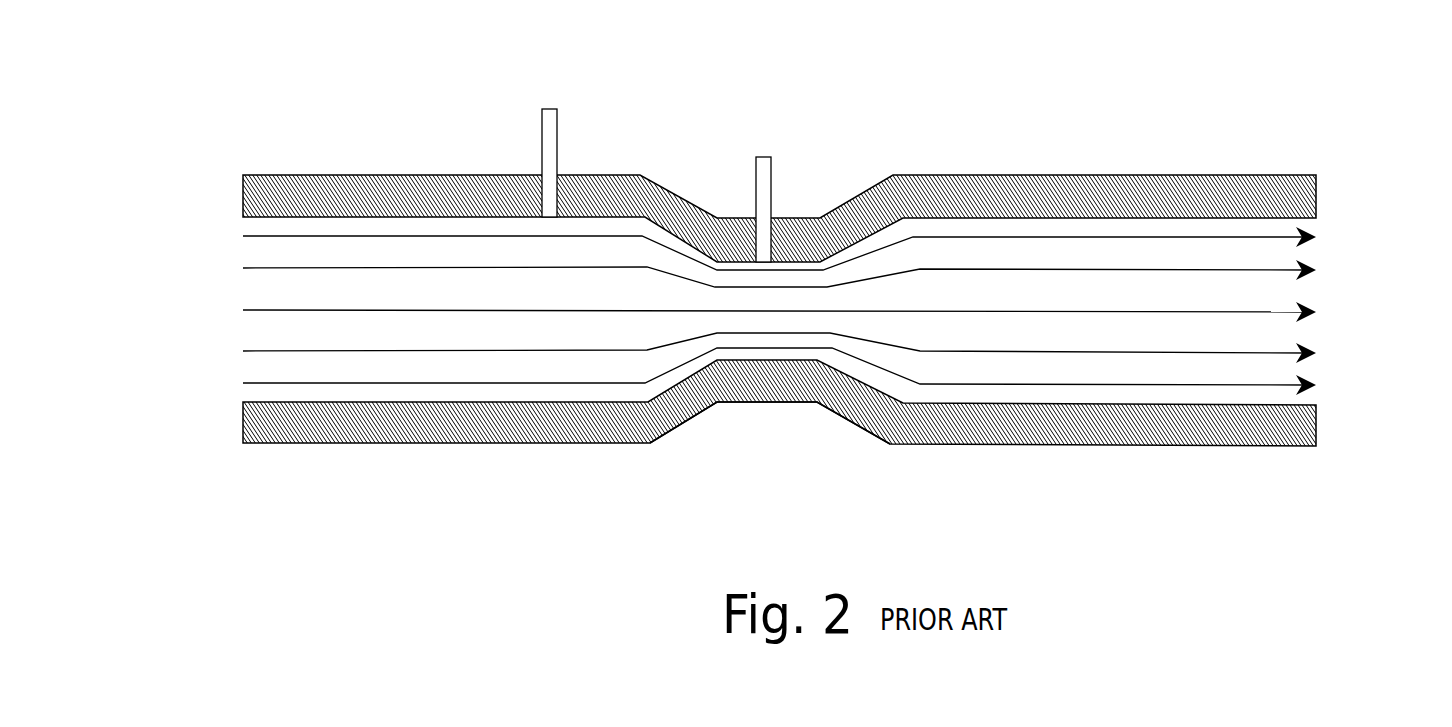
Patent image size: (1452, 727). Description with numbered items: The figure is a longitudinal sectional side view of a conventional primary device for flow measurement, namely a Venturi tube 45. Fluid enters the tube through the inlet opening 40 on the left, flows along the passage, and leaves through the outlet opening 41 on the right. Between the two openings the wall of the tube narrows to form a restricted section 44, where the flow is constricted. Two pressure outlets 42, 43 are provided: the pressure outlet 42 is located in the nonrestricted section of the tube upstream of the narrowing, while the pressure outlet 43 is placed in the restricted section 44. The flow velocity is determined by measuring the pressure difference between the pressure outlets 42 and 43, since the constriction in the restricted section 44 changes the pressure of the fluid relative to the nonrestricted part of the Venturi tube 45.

The inlet opening 40 is at (231, 339).
The outlet opening 41 is at (1311, 285).
The pressure outlet 42 is at (555, 101).
The pressure outlet 43 is at (768, 152).
The restricted section 44 is at (774, 426).
The Venturi tube 45 is at (442, 481).